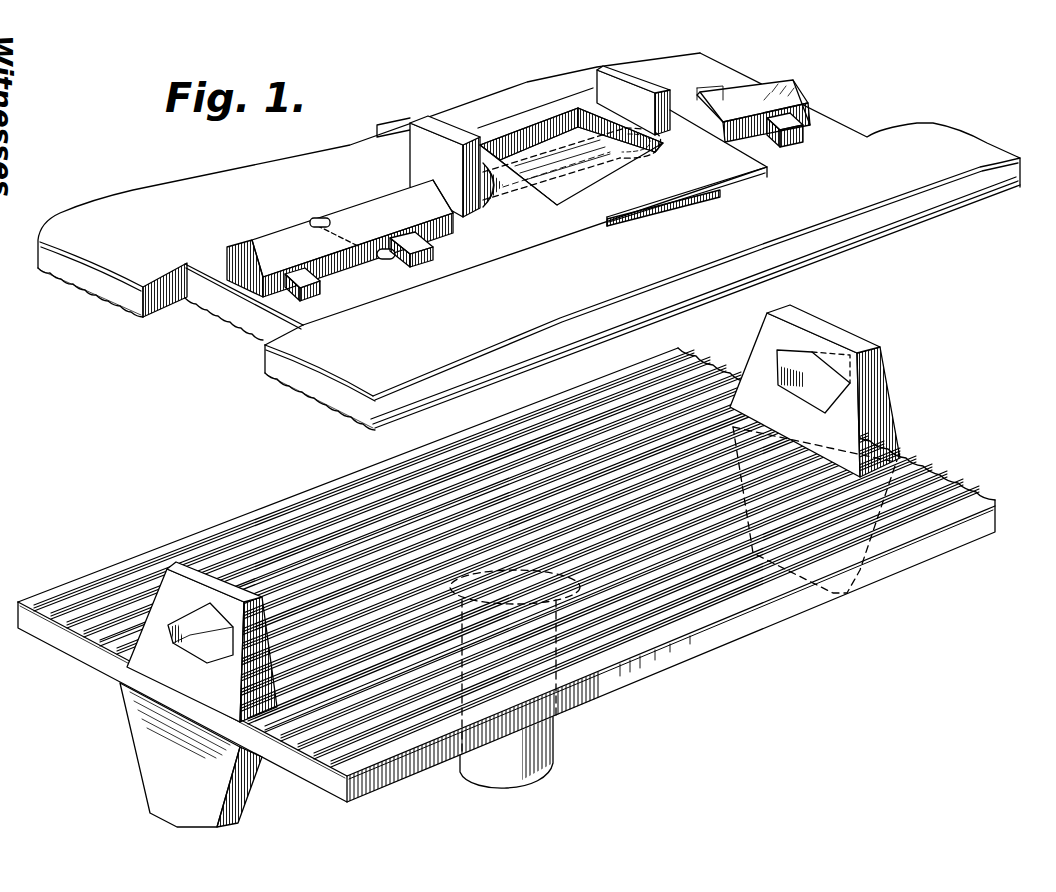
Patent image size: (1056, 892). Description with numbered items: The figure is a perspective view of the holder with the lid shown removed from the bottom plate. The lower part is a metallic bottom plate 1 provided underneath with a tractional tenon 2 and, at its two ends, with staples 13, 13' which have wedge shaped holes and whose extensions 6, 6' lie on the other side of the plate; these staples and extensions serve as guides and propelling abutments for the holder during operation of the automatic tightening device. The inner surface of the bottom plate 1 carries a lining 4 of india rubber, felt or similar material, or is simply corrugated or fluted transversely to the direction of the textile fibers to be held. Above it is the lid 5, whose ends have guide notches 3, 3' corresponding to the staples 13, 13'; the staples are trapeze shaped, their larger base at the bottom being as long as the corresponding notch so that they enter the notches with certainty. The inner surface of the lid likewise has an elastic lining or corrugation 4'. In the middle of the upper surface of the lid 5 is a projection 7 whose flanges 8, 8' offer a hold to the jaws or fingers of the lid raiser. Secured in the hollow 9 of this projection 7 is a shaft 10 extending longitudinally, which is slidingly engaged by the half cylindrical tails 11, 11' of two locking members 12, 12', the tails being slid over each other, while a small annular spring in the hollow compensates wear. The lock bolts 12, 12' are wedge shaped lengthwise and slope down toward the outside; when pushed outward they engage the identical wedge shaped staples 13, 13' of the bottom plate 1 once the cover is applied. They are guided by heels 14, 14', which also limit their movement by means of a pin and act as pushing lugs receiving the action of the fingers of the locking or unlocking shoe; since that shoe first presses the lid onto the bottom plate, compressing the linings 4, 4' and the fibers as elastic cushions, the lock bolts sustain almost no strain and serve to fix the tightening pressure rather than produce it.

The bottom plate 1 is at (707, 653).
The tractional tenon 2 is at (550, 760).
The guide notch 3 is at (369, 218).
The guide notch 3' is at (695, 240).
The lining 4 is at (327, 692).
The lining 4' is at (206, 358).
The lid 5 is at (343, 355).
The staple extension 6 is at (191, 755).
The staple extension 6' is at (822, 520).
The projection 7 is at (537, 230).
The flange 8 is at (657, 231).
The flange 8' is at (394, 103).
The hollow 9 is at (500, 143).
The shaft 10 is at (483, 210).
The half cylindrical tail 11 is at (547, 125).
The half cylindrical tail 11' is at (592, 96).
The lock bolt 12 is at (340, 248).
The lock bolt 12' is at (753, 92).
The staple 13 is at (195, 618).
The staple 13' is at (842, 391).
The heel 14 is at (445, 166).
The heel 14' is at (633, 83).